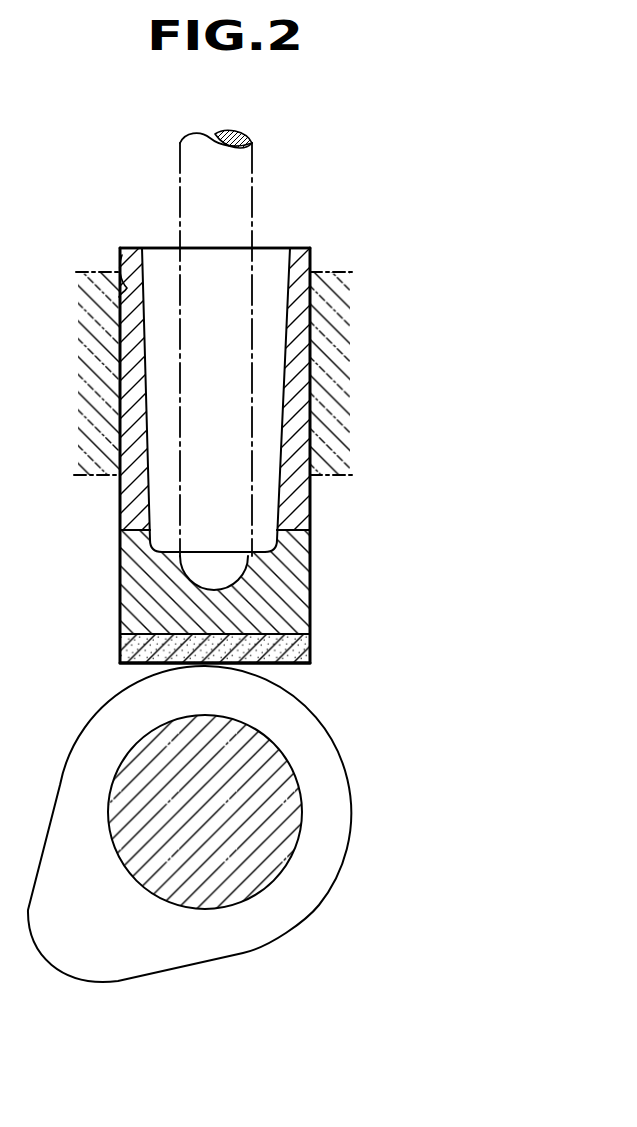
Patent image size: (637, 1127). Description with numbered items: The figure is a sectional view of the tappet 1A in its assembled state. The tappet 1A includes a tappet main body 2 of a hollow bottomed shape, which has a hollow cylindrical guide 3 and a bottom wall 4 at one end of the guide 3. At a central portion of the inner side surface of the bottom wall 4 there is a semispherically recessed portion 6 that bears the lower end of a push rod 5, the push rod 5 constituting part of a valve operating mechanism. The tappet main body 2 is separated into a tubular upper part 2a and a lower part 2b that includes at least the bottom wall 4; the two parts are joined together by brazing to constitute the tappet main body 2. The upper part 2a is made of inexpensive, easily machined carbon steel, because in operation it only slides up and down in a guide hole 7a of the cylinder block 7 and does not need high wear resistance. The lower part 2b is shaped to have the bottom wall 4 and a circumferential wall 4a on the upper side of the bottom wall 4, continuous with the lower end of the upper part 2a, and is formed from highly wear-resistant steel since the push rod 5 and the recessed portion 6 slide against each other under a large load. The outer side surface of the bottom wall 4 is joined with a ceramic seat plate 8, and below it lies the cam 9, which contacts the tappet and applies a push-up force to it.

The tappet 1A is at (295, 247).
The tappet main body 2 is at (118, 516).
The upper part 2a is at (315, 258).
The lower part 2b is at (312, 634).
The hollow cylindrical guide 3 is at (313, 398).
The bottom wall 4 is at (220, 619).
The circumferential wall 4a is at (296, 540).
The push rod 5 is at (190, 190).
The semispherically recessed portion 6 is at (203, 585).
The cylinder block 7 is at (92, 343).
The guide hole 7a is at (121, 258).
The ceramic seat plate 8 is at (135, 655).
The cam 9 is at (127, 971).